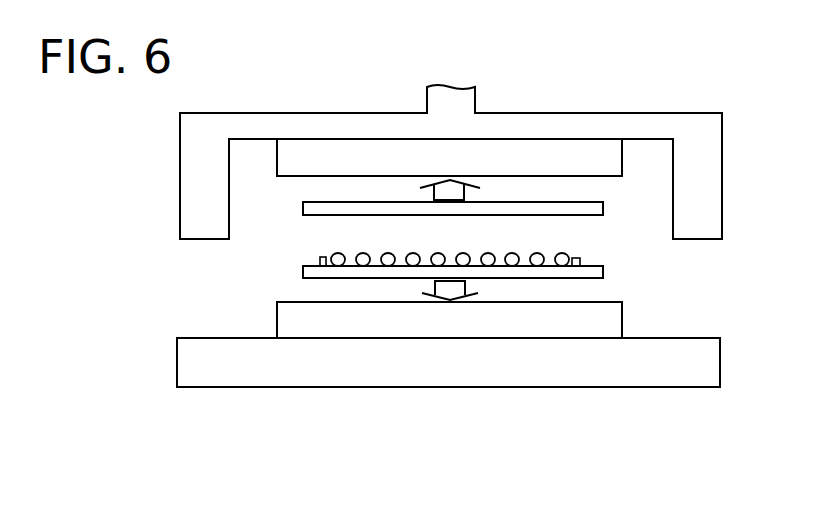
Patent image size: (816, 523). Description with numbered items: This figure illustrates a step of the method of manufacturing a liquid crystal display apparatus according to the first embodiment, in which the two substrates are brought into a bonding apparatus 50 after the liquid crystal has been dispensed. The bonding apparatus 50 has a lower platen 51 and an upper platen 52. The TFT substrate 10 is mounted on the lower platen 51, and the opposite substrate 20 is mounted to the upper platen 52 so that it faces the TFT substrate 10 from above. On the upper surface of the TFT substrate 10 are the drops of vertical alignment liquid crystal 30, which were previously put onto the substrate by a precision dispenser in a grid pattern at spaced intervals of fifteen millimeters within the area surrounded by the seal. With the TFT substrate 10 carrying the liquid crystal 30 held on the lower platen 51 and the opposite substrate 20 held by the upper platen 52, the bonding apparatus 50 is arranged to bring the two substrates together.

The bonding apparatus 50 is at (668, 87).
The upper platen 52 is at (292, 168).
The lower platen 51 is at (277, 320).
The opposite substrate 20 is at (604, 206).
The TFT substrate 10 is at (604, 270).
The liquid crystal 30 is at (513, 254).